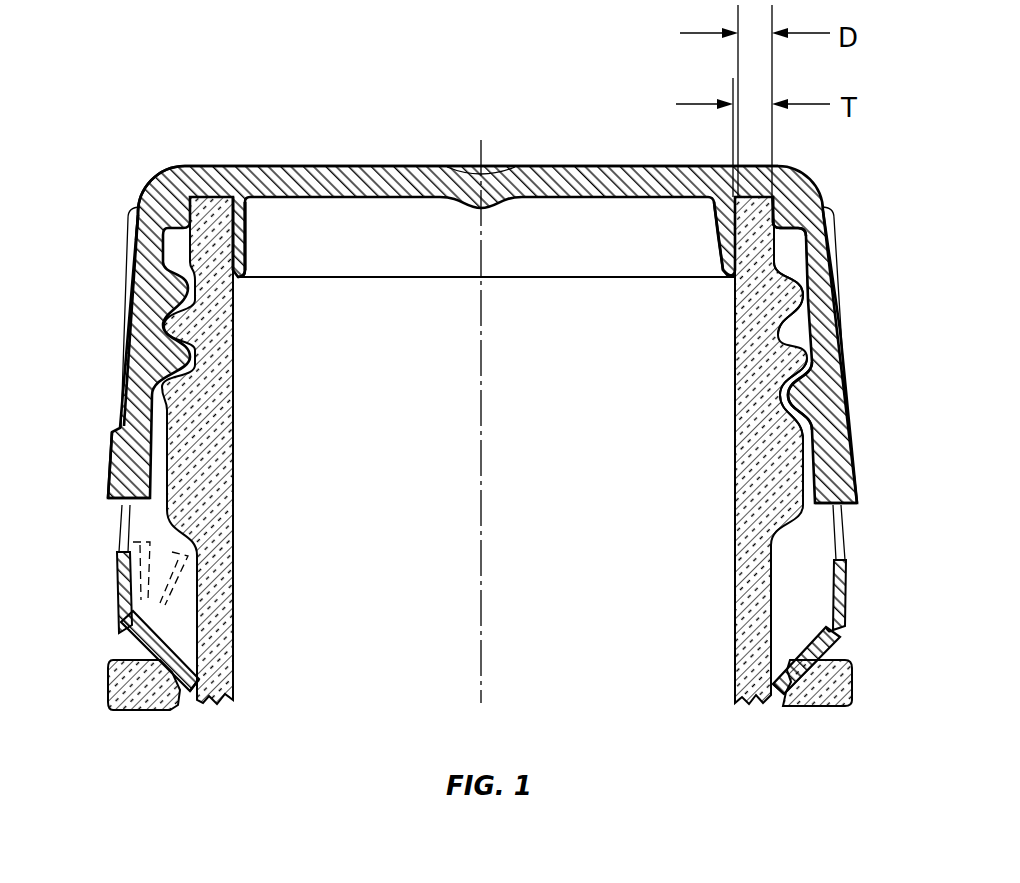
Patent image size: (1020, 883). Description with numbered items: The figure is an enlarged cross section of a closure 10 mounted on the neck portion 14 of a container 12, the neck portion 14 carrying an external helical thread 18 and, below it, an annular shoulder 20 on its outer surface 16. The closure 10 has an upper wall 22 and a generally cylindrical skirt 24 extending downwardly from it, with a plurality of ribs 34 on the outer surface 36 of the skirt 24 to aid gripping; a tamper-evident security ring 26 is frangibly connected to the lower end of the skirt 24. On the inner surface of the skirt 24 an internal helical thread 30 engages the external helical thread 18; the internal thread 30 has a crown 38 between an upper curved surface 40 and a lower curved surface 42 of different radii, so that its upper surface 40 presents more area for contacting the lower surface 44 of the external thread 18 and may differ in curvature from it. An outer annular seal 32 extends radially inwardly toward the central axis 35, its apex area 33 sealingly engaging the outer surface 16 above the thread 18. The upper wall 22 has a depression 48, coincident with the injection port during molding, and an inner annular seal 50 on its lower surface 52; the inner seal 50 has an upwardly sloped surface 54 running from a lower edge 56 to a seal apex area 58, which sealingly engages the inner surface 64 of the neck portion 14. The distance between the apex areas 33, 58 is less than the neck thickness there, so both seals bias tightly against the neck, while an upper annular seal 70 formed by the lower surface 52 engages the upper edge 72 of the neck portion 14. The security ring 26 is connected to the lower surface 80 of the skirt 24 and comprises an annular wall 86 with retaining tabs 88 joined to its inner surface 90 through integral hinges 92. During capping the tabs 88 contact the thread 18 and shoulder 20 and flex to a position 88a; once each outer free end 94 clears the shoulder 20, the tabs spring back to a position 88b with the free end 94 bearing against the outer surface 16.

The closure 10 is at (585, 45).
The container 12 is at (860, 679).
The neck portion 14 is at (752, 604).
The outer surface 16 is at (773, 590).
The external helical thread 18 is at (795, 271).
The annular shoulder 20 is at (170, 420).
The upper wall 22 is at (578, 182).
The skirt 24 is at (133, 442).
The tamper-evident security ring 26 is at (122, 590).
The internal helical thread 30 is at (186, 378).
The outer annular seal 32 is at (150, 221).
The apex area 33 is at (778, 221).
The ribs 34 is at (132, 276).
The central axis 35 is at (476, 441).
The outer surface 36 is at (122, 472).
The crown 38 is at (787, 407).
The upper curved surface 40 is at (814, 308).
The lower curved surface 42 is at (798, 410).
The lower surface 44 is at (773, 323).
The depression 48 is at (497, 182).
The inner annular seal 50 is at (240, 240).
The lower surface 52 is at (380, 199).
The upwardly sloped surface 54 is at (723, 271).
The lower edge 56 is at (380, 278).
The seal apex area 58 is at (727, 236).
The inner surface 64 is at (733, 511).
The upper annular seal 70 is at (178, 170).
The upper edge 72 is at (229, 195).
The lower surface 80 is at (848, 504).
The annular wall 86 is at (841, 600).
The retaining tabs 88 is at (157, 647).
The flexed position 88a is at (118, 540).
The sprung-back position 88b is at (121, 504).
The inner surface 90 is at (820, 562).
The integral hinges 92 is at (838, 628).
The outer free end 94 is at (184, 691).